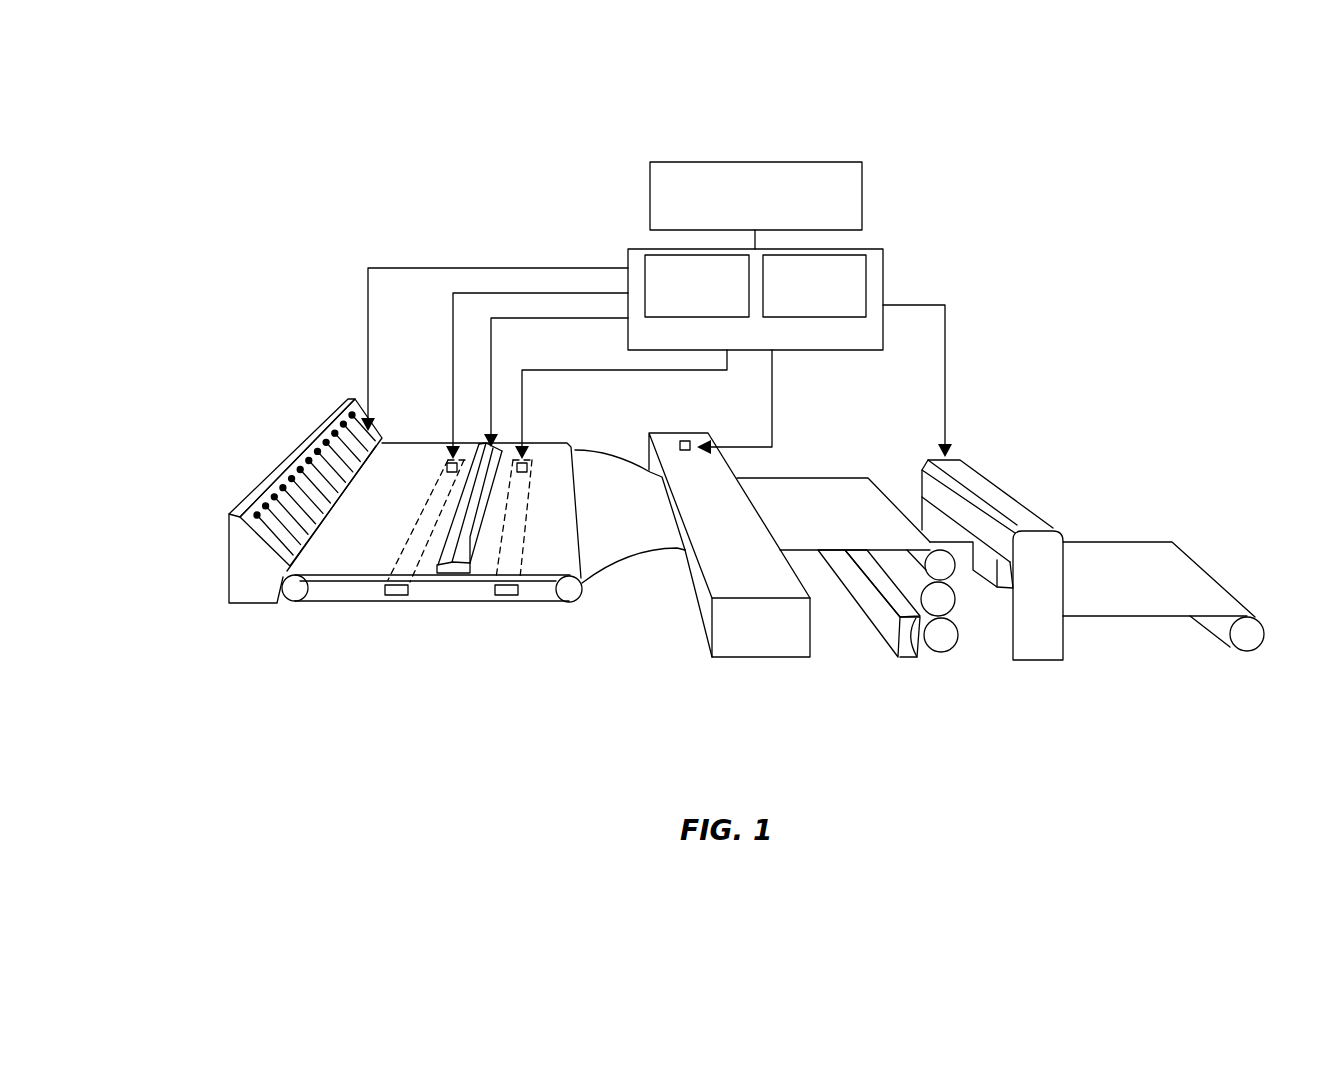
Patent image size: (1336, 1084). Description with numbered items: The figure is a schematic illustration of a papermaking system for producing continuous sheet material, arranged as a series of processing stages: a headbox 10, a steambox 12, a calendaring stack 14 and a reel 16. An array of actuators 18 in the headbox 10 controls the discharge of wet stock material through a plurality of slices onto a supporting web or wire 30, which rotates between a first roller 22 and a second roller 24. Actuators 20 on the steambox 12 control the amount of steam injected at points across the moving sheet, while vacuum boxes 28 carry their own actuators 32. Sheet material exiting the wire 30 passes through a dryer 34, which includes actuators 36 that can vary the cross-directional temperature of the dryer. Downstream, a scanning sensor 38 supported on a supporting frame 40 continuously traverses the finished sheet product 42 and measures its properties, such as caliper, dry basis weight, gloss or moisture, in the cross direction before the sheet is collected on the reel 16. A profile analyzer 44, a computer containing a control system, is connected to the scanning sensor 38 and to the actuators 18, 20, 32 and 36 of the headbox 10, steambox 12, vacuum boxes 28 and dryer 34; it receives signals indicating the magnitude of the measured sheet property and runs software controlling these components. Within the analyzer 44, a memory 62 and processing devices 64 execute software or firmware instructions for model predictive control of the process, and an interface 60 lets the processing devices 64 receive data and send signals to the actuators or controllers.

The headbox 10 is at (252, 571).
The steambox 12 is at (457, 574).
The calendaring stack 14 is at (930, 660).
The reel 16 is at (1219, 664).
The array of actuators 18 is at (362, 424).
The actuators 20 is at (441, 481).
The roller 22 is at (292, 594).
The roller 24 is at (569, 595).
The vacuum boxes 28 is at (400, 593).
The supporting web or wire 30 is at (440, 582).
The actuators 32 is at (545, 497).
The dryer 34 is at (737, 648).
The actuators 36 is at (639, 417).
The scanning sensor 38 is at (985, 570).
The supporting frame 40 is at (992, 609).
The finished sheet product 42 is at (1159, 574).
The profile analyzer 44 is at (862, 348).
The interface 60 is at (767, 220).
The memory 62 is at (710, 311).
The processing devices 64 is at (865, 311).